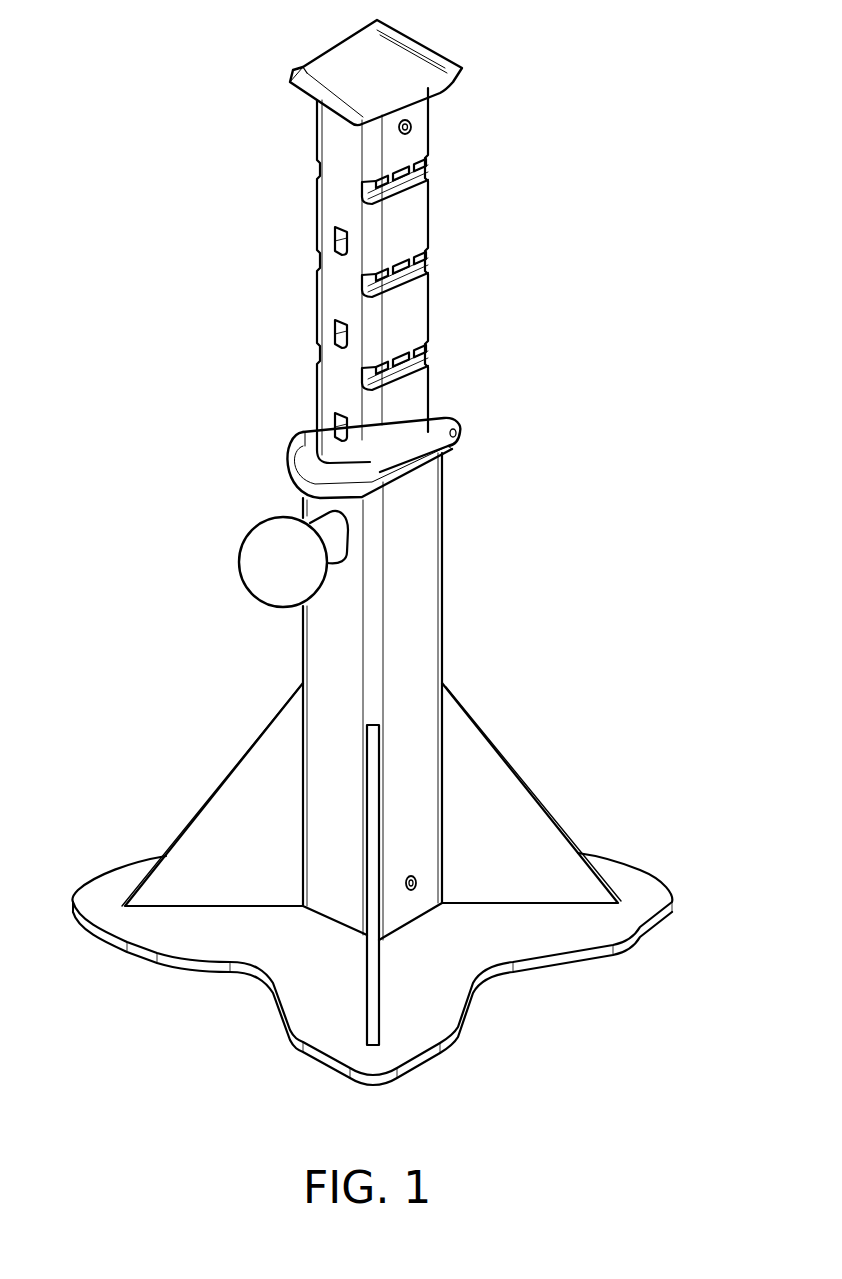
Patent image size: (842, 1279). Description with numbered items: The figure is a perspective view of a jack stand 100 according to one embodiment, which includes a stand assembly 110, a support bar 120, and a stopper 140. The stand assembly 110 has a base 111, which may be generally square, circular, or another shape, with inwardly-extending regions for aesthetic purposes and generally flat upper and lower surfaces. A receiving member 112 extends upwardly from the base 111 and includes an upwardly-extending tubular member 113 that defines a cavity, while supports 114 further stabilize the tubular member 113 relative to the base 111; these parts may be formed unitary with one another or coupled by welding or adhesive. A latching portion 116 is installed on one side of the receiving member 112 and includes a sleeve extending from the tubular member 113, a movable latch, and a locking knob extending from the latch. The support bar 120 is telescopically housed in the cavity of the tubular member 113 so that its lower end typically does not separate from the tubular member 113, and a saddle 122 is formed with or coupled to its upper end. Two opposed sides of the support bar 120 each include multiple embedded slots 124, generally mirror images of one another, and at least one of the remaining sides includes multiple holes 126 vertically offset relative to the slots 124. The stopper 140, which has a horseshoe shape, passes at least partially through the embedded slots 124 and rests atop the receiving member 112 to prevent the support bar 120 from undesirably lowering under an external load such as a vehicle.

The jack stand 100 is at (138, 162).
The stand assembly 110 is at (590, 604).
The base 111 is at (603, 928).
The receiving member 112 is at (420, 525).
The tubular member 113 is at (415, 620).
The supports 114 is at (537, 842).
The latching portion 116 is at (226, 499).
The support bar 120 is at (466, 304).
The saddle 122 is at (343, 70).
The embedded slots 124 is at (408, 263).
The holes 126 is at (335, 247).
The stopper 140 is at (269, 435).